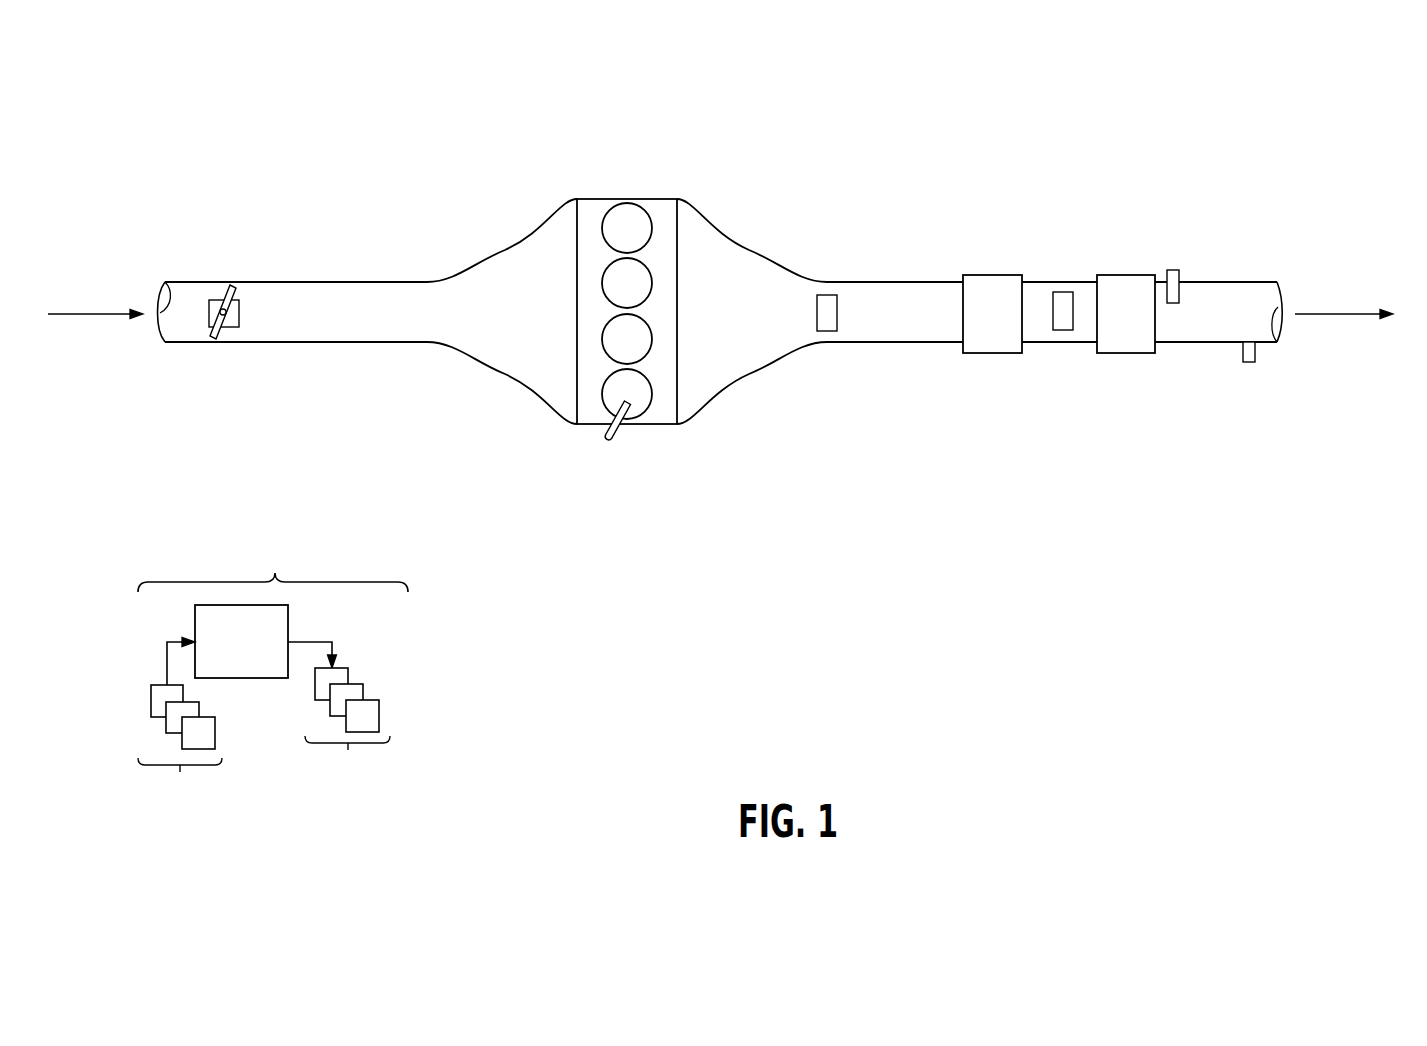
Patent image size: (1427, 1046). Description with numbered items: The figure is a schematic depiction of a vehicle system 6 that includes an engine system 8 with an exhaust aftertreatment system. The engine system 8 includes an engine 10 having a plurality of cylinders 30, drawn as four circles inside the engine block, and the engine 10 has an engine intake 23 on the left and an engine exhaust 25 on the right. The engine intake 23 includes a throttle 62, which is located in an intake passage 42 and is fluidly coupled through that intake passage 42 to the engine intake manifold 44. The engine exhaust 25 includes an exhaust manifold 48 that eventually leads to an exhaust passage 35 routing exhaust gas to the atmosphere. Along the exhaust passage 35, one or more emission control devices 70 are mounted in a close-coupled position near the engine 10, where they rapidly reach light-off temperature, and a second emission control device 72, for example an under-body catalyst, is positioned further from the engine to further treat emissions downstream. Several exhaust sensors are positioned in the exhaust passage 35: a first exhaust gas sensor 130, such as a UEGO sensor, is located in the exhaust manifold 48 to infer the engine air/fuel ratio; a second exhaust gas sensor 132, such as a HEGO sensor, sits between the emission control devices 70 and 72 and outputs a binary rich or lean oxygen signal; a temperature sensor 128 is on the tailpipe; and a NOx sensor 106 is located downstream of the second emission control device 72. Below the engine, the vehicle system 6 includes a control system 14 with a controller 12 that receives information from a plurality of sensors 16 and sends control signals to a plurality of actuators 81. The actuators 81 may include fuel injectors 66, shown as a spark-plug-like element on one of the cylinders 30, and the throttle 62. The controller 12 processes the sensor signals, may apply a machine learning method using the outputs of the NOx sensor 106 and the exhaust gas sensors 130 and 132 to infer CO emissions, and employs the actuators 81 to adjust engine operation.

The vehicle system 6 is at (106, 132).
The engine system 8 is at (670, 171).
The engine 10 is at (678, 293).
The controller 12 is at (241, 641).
The control system 14 is at (273, 673).
The plurality of sensors 16 is at (180, 729).
The engine intake 23 is at (360, 266).
The engine exhaust 25 is at (790, 250).
The cylinders 30 is at (650, 222).
The exhaust passage 35 is at (1225, 280).
The intake passage 42 is at (276, 346).
The engine intake manifold 44 is at (502, 311).
The exhaust manifold 48 is at (752, 311).
The throttle 62 is at (238, 322).
The fuel injectors 66 is at (622, 430).
The emission control devices 70 is at (992, 314).
The second emission control device 72 is at (1126, 314).
The plurality of actuators 81 is at (339, 720).
The NOx sensor 106 is at (1168, 270).
The temperature sensor 128 is at (1243, 350).
The first exhaust gas sensor 130 is at (836, 333).
The second exhaust gas sensor 132 is at (1070, 327).